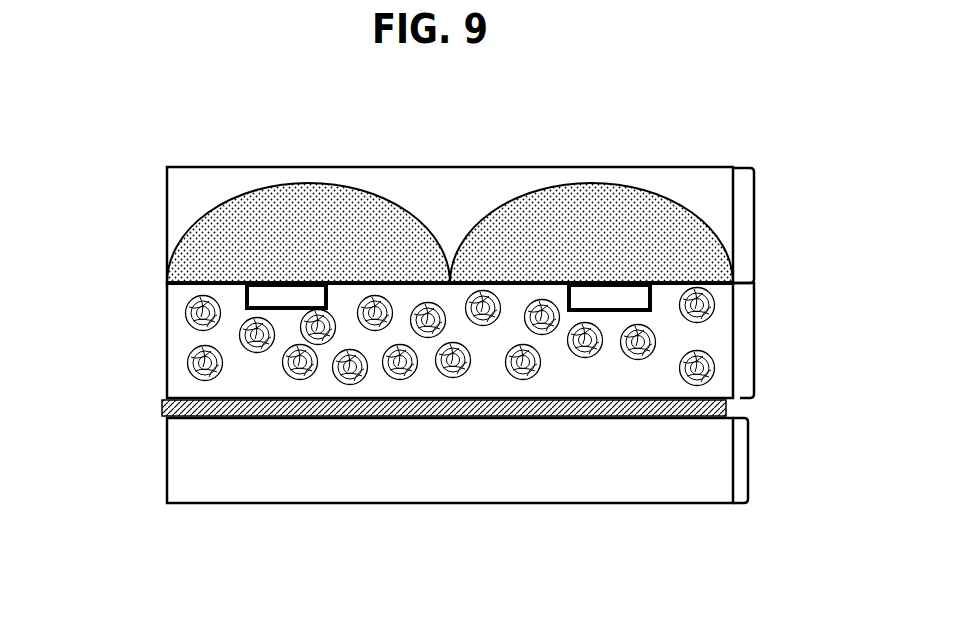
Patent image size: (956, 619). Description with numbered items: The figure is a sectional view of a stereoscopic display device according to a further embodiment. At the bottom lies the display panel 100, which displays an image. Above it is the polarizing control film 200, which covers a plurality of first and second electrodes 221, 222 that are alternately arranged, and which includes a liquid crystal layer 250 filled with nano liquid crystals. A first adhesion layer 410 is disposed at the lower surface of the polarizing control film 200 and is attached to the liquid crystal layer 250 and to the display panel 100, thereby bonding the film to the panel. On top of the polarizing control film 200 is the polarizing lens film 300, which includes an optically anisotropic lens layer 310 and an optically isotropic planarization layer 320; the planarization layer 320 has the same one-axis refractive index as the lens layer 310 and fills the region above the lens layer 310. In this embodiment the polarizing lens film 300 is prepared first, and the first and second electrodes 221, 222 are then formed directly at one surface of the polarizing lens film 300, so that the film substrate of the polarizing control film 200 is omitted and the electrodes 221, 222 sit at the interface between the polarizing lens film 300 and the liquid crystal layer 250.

The display panel 100 is at (748, 462).
The polarizing control film 200 is at (754, 342).
The first electrode 221 is at (280, 297).
The second electrode 222 is at (610, 310).
The liquid crystal layer 250 is at (168, 333).
The polarizing lens film 300 is at (754, 225).
The lens layer 310 is at (195, 253).
The planarization layer 320 is at (222, 183).
The first adhesion layer 410 is at (285, 410).